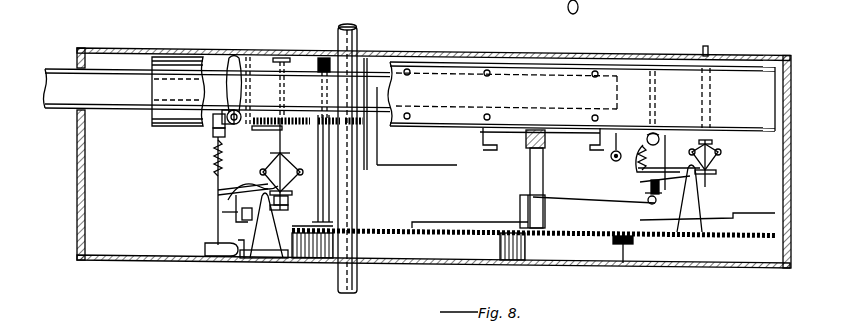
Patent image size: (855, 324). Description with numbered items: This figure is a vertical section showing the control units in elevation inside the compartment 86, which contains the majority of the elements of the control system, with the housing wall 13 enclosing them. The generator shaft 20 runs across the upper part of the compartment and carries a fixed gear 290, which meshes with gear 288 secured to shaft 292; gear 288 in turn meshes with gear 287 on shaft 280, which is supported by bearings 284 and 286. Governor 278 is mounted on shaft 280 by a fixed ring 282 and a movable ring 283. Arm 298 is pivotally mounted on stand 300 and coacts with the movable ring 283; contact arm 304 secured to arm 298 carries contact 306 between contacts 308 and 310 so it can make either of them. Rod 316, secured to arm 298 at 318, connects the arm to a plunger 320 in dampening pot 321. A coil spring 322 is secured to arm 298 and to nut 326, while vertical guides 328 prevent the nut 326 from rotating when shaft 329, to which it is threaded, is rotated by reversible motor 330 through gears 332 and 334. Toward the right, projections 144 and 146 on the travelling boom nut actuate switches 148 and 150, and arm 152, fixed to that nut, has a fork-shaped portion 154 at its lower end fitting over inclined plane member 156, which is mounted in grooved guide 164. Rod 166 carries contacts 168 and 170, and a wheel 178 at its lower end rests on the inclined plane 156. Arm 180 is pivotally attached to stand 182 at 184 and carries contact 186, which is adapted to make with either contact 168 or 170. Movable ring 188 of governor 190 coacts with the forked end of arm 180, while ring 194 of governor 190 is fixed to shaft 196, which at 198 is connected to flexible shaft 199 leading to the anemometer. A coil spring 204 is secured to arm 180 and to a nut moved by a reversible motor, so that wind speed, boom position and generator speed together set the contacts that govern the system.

The housing 13 is at (738, 58).
The shaft 20 is at (352, 25).
The compartment 86 is at (126, 273).
The projection 144 is at (540, 142).
The projection 146 is at (590, 146).
The switch 148 is at (470, 165).
The switch 150 is at (555, 165).
The arm 152 is at (530, 170).
The fork-shaped portion 154 is at (530, 207).
The inclined plane member 156 is at (590, 204).
The grooved guide 164 is at (758, 230).
The rod 166 is at (651, 193).
The contact 168 is at (642, 182).
The contact 170 is at (666, 198).
The wheel 178 is at (650, 204).
The arm 180 is at (662, 162).
The stand 182 is at (697, 200).
The pivot 184 is at (688, 161).
The contact 186 is at (691, 218).
The movable ring 188 is at (715, 174).
The governor 190 is at (725, 164).
The ring 194 is at (709, 144).
The shaft 196 is at (720, 153).
The connection 198 is at (708, 142).
The flexible shaft 199 is at (710, 120).
The coil spring 204 is at (656, 154).
The governor 278 is at (296, 161).
The shaft 280 is at (276, 129).
The fixed ring 282 is at (278, 160).
The movable ring 283 is at (288, 192).
The bearing 284 is at (289, 201).
The bearing 286 is at (282, 57).
The gear 287 is at (268, 118).
The gear 288 is at (323, 60).
The gear 290 is at (366, 95).
The shaft 292 is at (340, 177).
The arm 298 is at (246, 193).
The stand 300 is at (264, 256).
The contact arm 304 is at (234, 210).
The contact 306 is at (241, 215).
The contact 308 is at (279, 210).
The contact 310 is at (266, 225).
The rod 316 is at (234, 200).
The attachment point 318 is at (218, 186).
The plunger 320 is at (206, 252).
The dampening pot 321 is at (244, 260).
The coil spring 322 is at (215, 163).
The nut 326 is at (216, 140).
The vertical guides 328 is at (213, 128).
The shaft 329 is at (224, 118).
The reversible motor 330 is at (212, 127).
The gear 332 is at (233, 65).
The gear 334 is at (247, 57).